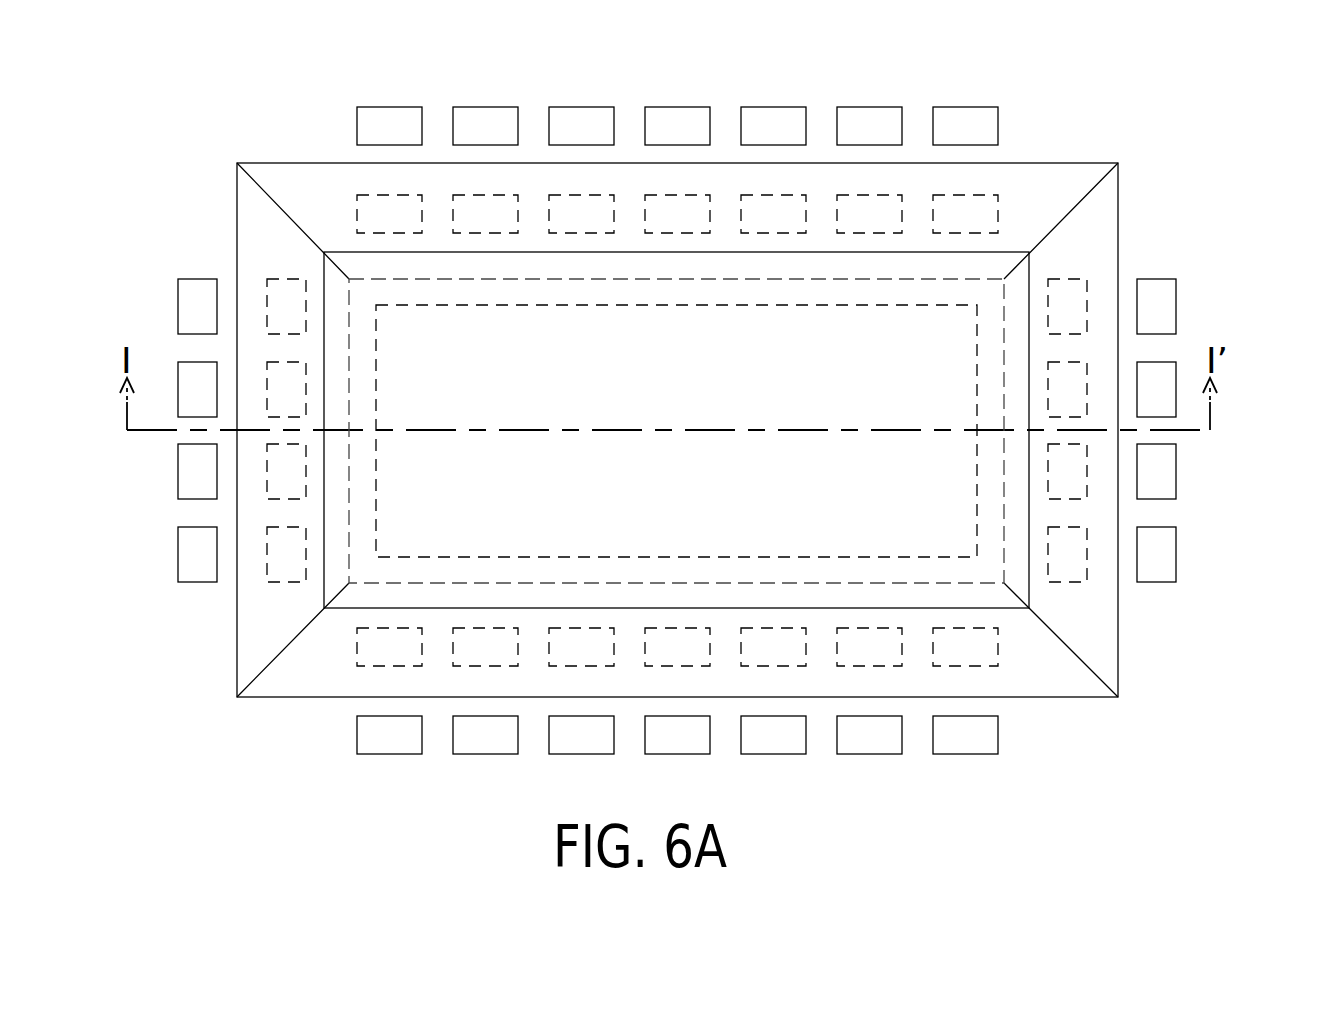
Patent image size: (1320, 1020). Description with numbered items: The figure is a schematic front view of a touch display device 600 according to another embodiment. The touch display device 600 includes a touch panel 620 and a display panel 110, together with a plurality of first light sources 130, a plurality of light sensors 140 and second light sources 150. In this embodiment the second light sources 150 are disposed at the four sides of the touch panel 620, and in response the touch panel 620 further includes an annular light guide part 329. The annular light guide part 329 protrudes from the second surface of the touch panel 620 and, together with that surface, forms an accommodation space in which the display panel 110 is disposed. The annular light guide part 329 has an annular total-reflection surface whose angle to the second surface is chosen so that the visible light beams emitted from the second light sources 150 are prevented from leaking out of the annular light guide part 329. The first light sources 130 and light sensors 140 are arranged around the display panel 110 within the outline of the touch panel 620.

The touch display device 600 is at (1263, 745).
The touch panel 620 is at (1118, 187).
The display panel 110 is at (978, 534).
The annular light guide part 329 is at (487, 583).
The second light source 150 is at (357, 118).
The first light sources 130 is at (997, 200).
The light sensors 140 is at (1073, 279).